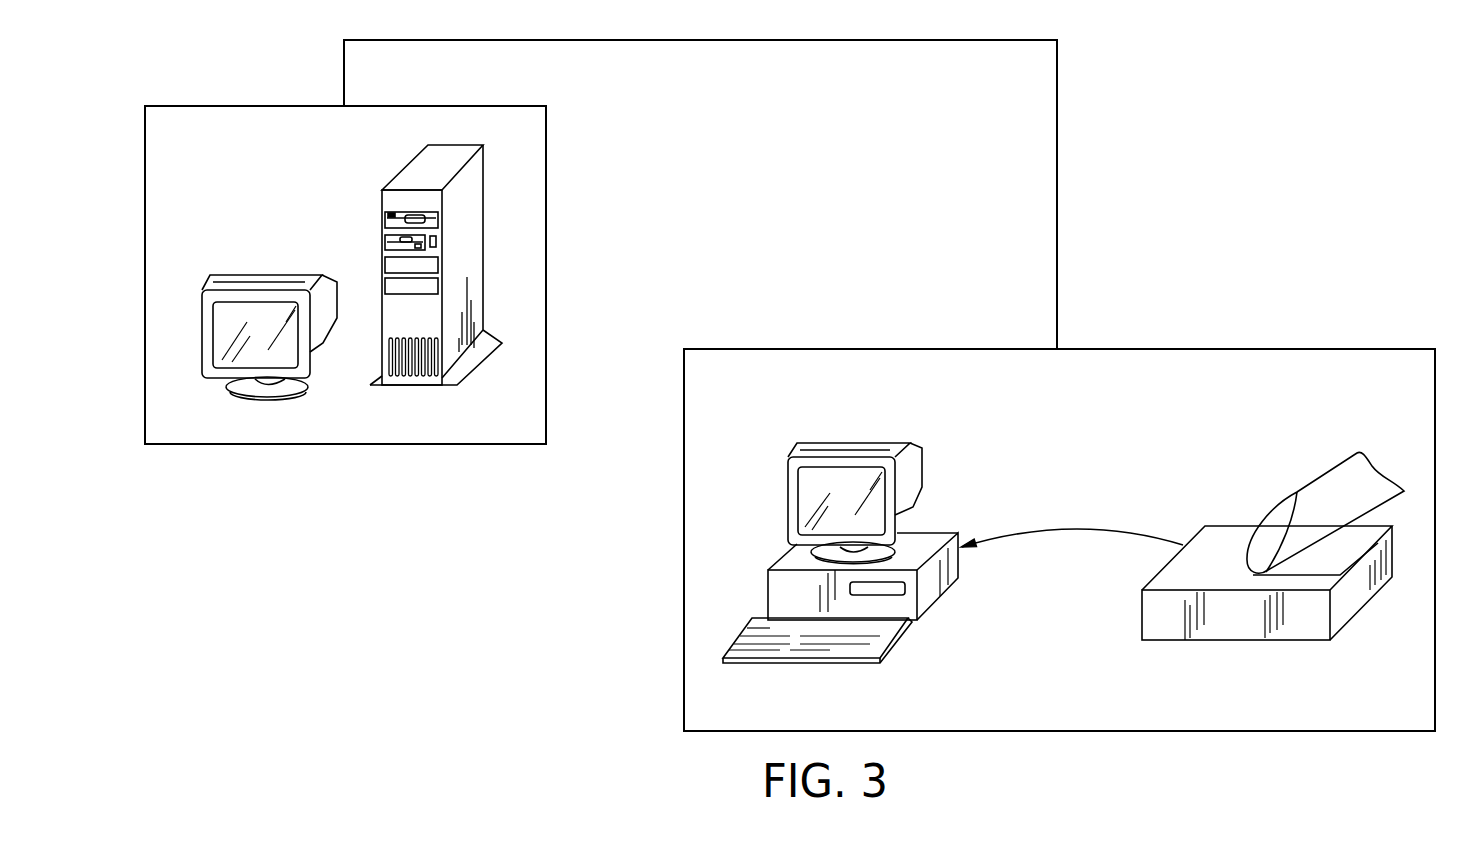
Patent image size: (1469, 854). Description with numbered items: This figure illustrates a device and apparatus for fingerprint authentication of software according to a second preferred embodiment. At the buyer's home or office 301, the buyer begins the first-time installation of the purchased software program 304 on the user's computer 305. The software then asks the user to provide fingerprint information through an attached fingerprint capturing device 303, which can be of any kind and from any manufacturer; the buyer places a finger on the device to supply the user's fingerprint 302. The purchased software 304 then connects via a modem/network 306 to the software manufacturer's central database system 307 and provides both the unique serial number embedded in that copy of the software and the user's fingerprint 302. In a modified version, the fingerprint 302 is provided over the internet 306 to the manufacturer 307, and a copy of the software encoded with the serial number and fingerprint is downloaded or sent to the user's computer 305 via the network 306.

The buyer's home or office 301 is at (1295, 349).
The user's fingerprint 302 is at (1317, 475).
The fingerprint capturing device 303 is at (1243, 640).
The software program 304 is at (900, 595).
The user's computer 305 is at (851, 456).
The modem/network 306 is at (677, 40).
The software manufacturer's central database system 307 is at (420, 444).